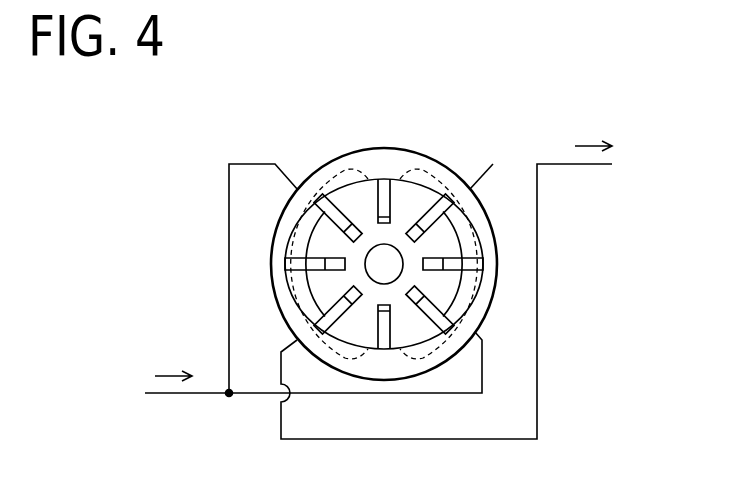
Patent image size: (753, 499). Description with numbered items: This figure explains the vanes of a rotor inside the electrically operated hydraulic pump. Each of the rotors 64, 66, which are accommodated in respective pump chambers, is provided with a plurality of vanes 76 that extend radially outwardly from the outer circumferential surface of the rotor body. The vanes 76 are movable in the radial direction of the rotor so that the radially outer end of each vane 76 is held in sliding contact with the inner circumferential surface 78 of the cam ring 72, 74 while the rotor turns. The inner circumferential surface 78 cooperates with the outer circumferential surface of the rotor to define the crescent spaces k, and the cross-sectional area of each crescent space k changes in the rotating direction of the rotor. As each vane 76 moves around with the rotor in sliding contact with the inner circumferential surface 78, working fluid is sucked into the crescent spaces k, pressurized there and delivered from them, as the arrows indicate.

The rotor 64 is at (384, 219).
The rotor 66 is at (351, 196).
The cam ring 72 is at (397, 243).
The cam ring 74 is at (401, 163).
The vane 76 is at (478, 281).
The inner circumferential surface 78 is at (295, 292).
The crescent space k is at (297, 242).